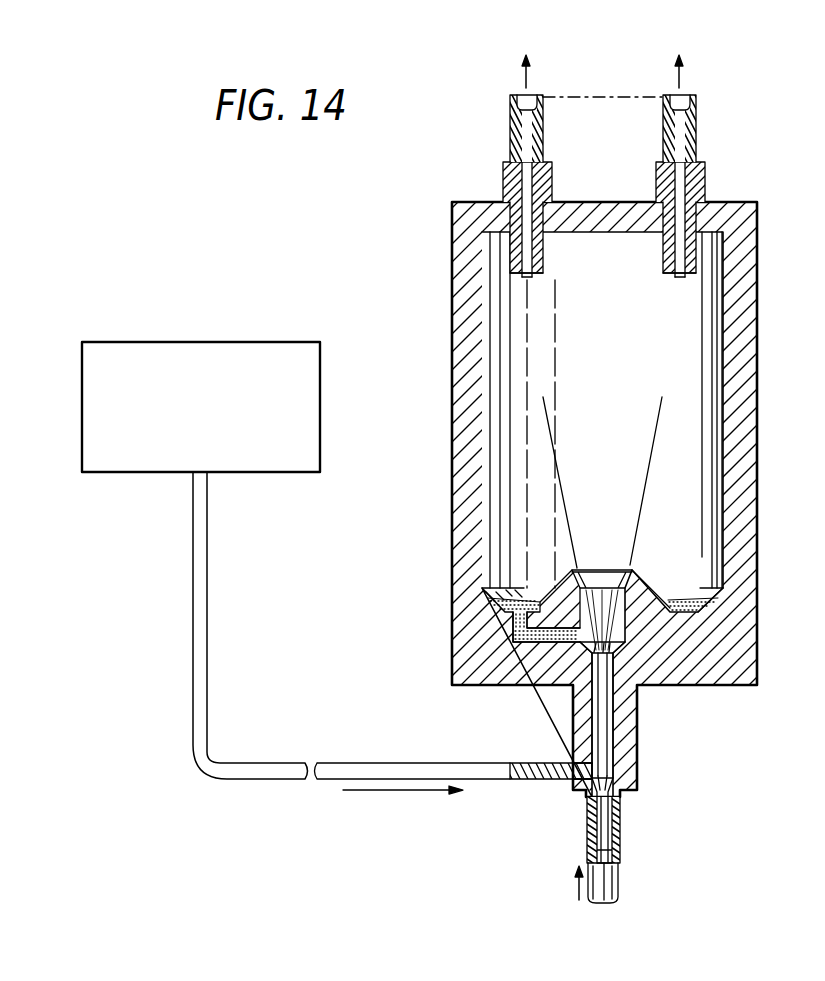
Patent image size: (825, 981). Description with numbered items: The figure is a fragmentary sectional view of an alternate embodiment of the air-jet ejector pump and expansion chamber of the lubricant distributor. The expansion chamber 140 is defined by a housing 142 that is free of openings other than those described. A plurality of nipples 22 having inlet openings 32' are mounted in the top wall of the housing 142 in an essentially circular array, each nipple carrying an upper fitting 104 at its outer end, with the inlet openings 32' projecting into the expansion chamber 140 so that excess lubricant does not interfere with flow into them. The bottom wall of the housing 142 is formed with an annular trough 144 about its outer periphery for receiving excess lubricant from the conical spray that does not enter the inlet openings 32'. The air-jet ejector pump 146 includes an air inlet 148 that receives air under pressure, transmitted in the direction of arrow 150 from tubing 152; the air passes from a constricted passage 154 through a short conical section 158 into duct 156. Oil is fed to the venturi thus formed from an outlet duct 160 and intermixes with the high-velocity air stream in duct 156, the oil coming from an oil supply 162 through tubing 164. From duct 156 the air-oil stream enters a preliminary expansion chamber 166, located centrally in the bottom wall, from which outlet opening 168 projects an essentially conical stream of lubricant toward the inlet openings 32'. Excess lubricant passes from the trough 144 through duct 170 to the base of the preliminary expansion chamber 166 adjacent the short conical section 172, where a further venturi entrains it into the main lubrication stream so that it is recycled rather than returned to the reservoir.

The outlet nozzle 104 is at (697, 120).
The nipple 22 is at (706, 176).
The inlet opening 32' is at (603, 300).
The housing 142 is at (757, 336).
The expansion chamber 140 is at (715, 418).
The annular trough 144 is at (708, 598).
The oil supply 162 is at (319, 405).
The tubing 164 is at (423, 767).
The outlet opening 168 is at (604, 574).
The preliminary expansion chamber 166 is at (642, 600).
The short conical section 172 is at (612, 648).
The duct 170 is at (533, 637).
The duct 156 is at (605, 696).
The outlet duct 160 is at (594, 766).
The air-jet ejector pump 146 is at (656, 742).
The short conical section 158 is at (612, 762).
The air inlet 148 is at (619, 815).
The constricted passage 154 is at (606, 831).
The tubing 152 is at (620, 884).
The arrow 150 is at (576, 882).